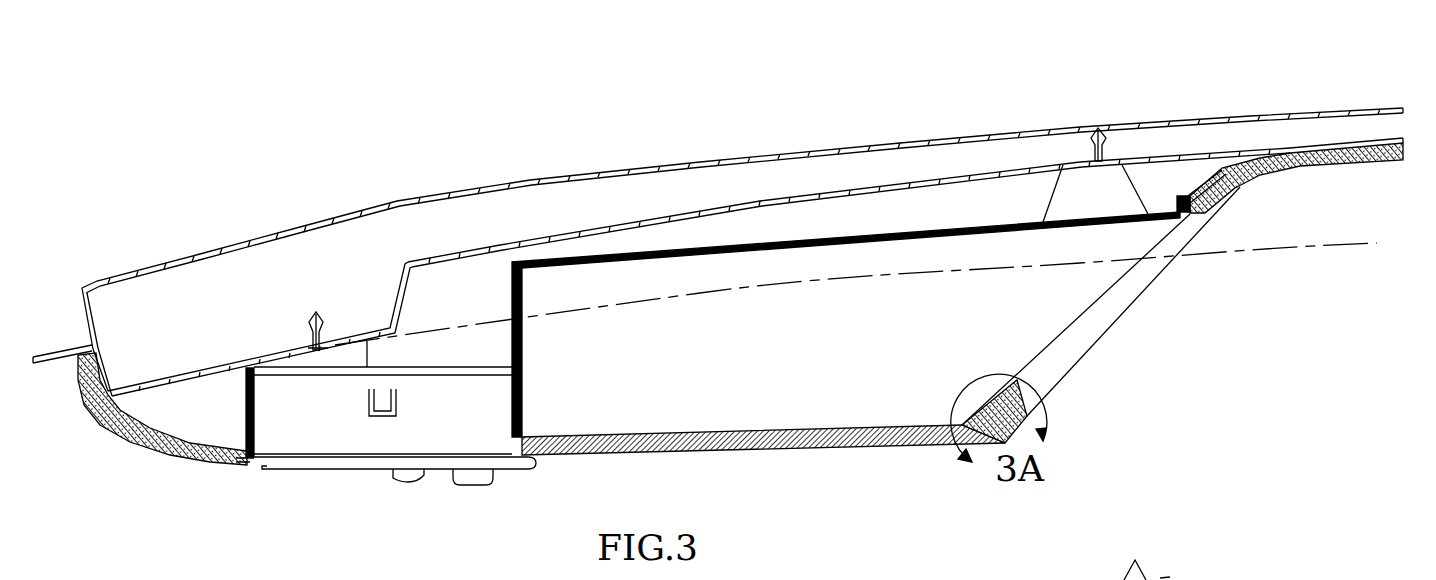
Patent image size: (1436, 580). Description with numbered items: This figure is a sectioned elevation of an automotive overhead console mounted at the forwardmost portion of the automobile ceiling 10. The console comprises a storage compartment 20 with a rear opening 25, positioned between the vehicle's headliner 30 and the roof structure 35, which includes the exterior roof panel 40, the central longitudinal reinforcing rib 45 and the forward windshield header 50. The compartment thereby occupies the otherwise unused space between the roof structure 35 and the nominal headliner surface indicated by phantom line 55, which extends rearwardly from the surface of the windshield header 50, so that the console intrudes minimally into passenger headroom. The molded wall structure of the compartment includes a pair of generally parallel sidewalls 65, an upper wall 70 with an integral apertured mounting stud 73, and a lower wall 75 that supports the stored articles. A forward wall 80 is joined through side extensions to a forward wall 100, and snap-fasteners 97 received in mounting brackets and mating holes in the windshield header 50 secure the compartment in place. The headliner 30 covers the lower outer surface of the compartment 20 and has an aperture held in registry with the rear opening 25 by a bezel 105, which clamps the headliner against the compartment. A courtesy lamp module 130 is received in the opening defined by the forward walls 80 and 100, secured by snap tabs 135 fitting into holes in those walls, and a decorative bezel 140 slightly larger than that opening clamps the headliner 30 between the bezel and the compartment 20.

The automobile ceiling 10 is at (1262, 190).
The storage compartment 20 is at (846, 323).
The rear opening 25 is at (1103, 306).
The headliner 30 is at (1360, 167).
The roof structure 35 is at (742, 194).
The exterior roof panel 40 is at (1228, 117).
The central longitudinal reinforcing rib 45 is at (1212, 151).
The forward windshield header 50 is at (216, 355).
The phantom line 55 is at (1352, 246).
The sidewalls 65 is at (846, 333).
The upper wall 70 is at (636, 265).
The apertured mounting stud 73 is at (1112, 198).
The lower wall 75 is at (645, 436).
The forward wall 80 is at (524, 342).
The snap-fasteners 97 is at (322, 322).
The forward wall 100 is at (246, 432).
The bezel 105 is at (1067, 372).
The courtesy lamp module 130 is at (320, 472).
The snap tabs 135 is at (368, 403).
The decorative bezel 140 is at (251, 466).